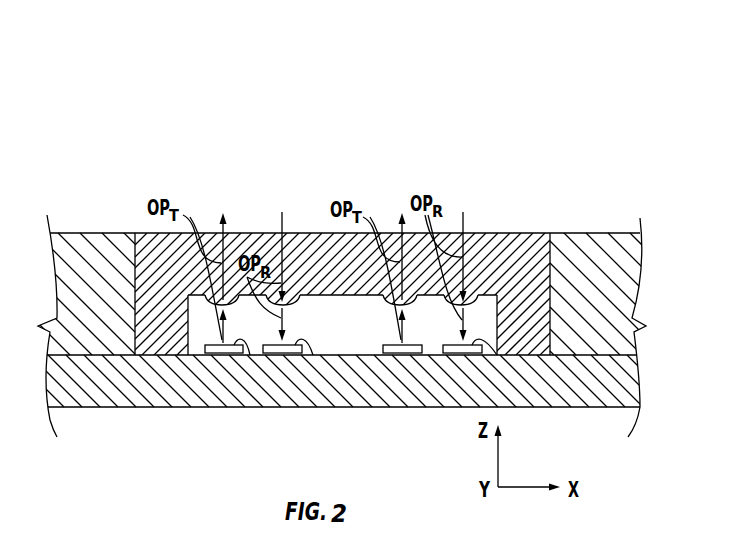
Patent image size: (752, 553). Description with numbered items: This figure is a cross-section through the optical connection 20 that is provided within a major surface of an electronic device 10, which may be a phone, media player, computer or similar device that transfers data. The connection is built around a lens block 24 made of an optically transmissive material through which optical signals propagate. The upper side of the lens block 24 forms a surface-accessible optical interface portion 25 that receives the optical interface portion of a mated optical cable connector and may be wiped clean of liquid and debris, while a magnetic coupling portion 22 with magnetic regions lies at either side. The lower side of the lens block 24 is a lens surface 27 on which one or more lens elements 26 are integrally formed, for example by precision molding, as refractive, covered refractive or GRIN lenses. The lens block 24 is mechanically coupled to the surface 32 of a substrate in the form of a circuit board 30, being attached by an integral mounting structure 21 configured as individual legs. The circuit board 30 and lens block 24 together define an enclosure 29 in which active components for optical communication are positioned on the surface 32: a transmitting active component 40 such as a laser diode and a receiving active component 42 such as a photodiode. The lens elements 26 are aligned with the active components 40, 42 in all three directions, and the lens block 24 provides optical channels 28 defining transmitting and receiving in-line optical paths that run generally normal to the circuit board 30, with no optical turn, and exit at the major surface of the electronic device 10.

The electronic device 10 is at (175, 72).
The optical connection 20 is at (182, 152).
The integral mounting structure 21 is at (128, 276).
The magnetic coupling portion 22 is at (108, 227).
The lens block 24 is at (338, 299).
The optical interface portion 25 is at (304, 226).
The lens elements 26 is at (474, 304).
The lens surface 27 is at (490, 303).
The optical channels 28 is at (273, 241).
The enclosure 29 is at (373, 309).
The circuit board 30 is at (151, 415).
The surface 32 is at (173, 352).
The transmitting active component 40 is at (397, 342).
The receiving active component 42 is at (310, 343).